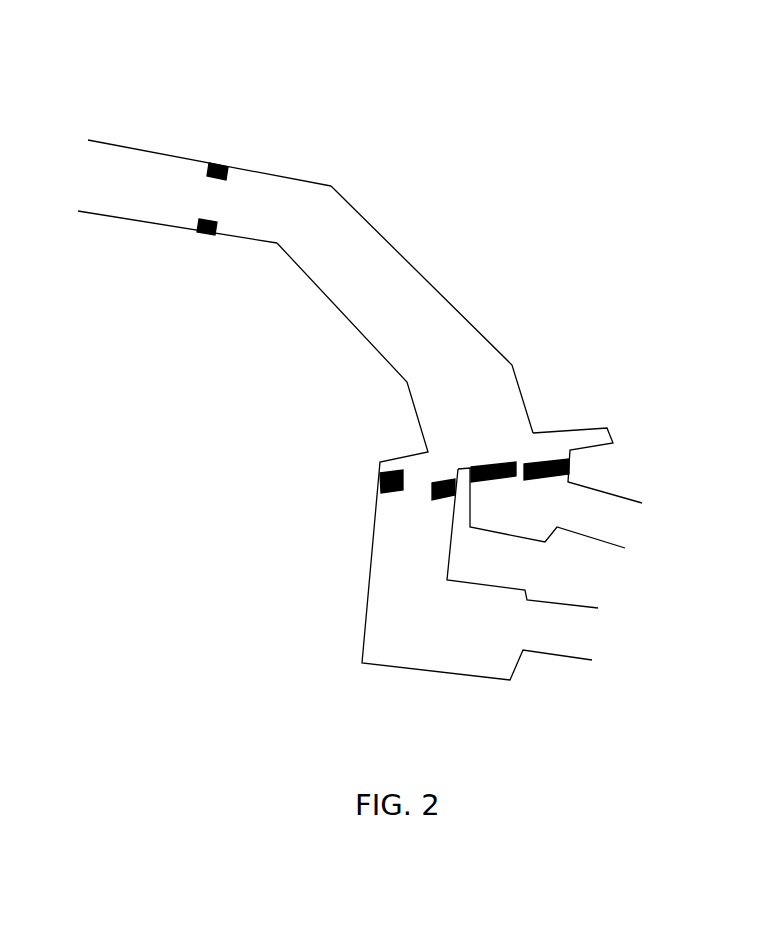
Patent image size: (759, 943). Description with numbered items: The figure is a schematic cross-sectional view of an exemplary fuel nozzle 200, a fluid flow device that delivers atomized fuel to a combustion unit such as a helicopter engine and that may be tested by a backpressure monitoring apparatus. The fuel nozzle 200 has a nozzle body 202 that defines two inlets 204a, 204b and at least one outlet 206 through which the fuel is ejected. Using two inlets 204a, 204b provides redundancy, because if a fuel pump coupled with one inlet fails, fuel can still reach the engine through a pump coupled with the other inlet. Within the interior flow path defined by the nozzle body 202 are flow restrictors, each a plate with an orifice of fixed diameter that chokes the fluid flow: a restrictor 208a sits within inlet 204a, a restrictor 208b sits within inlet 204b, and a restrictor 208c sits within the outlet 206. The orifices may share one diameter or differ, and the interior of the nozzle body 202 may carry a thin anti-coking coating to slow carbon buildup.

The fuel nozzle 200 is at (590, 156).
The nozzle body 202 is at (331, 186).
The inlet 204a is at (580, 648).
The inlet 204b is at (622, 508).
The outlet 206 is at (110, 148).
The restrictor 208a is at (392, 488).
The restrictor 208b is at (546, 458).
The restrictor 208c is at (215, 233).